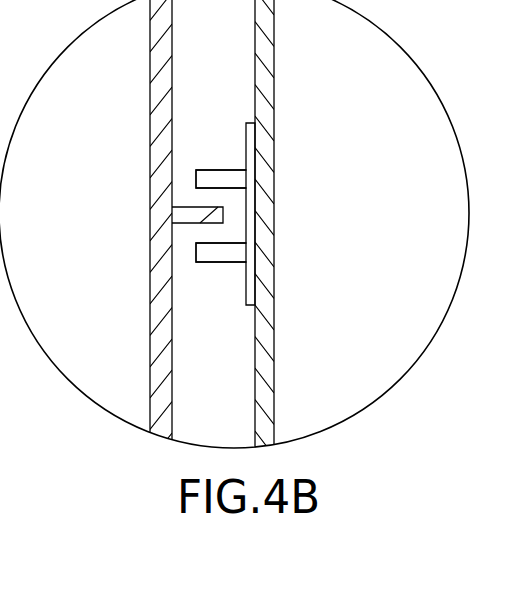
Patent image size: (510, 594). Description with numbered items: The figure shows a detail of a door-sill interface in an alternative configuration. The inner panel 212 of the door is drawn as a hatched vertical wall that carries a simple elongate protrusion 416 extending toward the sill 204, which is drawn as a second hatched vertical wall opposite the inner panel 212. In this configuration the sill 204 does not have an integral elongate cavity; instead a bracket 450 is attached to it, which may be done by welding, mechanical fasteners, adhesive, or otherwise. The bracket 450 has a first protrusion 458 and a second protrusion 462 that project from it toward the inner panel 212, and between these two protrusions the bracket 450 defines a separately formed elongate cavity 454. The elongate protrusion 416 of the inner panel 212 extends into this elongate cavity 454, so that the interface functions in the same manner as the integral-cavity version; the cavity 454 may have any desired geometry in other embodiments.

The inner panel 212 is at (162, 47).
The sill 204 is at (268, 50).
The elongate protrusion 416 is at (196, 217).
The bracket 450 is at (267, 214).
The elongate cavity 454 is at (229, 215).
The first protrusion 458 is at (212, 178).
The second protrusion 462 is at (222, 253).